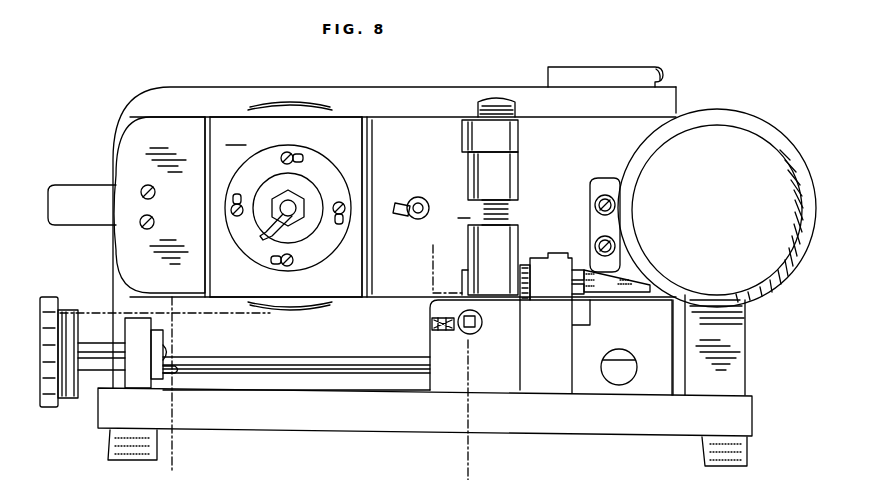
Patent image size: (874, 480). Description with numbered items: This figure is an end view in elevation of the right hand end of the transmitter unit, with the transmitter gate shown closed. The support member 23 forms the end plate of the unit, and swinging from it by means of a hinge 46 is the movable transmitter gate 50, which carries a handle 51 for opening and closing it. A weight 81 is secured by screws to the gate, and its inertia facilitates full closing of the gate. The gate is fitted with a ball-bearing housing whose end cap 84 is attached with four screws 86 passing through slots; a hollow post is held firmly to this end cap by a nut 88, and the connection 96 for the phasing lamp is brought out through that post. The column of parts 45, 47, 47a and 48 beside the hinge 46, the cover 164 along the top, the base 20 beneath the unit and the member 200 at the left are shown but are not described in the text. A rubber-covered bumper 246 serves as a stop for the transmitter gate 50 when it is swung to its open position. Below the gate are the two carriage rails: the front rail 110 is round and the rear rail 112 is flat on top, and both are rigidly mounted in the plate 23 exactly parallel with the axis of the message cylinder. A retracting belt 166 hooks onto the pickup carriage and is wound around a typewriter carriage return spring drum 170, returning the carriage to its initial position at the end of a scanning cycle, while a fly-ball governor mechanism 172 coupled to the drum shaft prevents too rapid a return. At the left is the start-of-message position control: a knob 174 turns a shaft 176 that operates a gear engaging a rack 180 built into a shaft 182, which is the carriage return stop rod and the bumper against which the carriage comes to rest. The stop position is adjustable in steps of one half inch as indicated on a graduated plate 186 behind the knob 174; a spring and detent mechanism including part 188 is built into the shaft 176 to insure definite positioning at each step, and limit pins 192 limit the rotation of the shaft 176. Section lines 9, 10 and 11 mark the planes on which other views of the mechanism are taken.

The section line 9- 9 is at (35, 322).
The section line 10- 10 is at (446, 251).
The section line 11- 11 is at (158, 303).
The base 20 is at (615, 432).
The support member 23 is at (428, 87).
The adjusting screw body 45 is at (520, 170).
The hinge 46 is at (520, 138).
The screw 47 is at (482, 207).
The knurled knob 47a is at (518, 107).
The spring 48 is at (512, 210).
The transmitter gate 50 is at (291, 206).
The handle 51 is at (70, 190).
The weight 81 is at (133, 133).
The end cap 84 is at (315, 165).
The screws 86 is at (344, 216).
The nut 88 is at (280, 192).
The lamp connection 96 is at (270, 224).
The front carriage rail 110 is at (420, 340).
The rear carriage rail 112 is at (630, 360).
The top cover plate 164 is at (617, 66).
The retracting belt 166 is at (610, 290).
The carriage return spring drum 170 is at (728, 86).
The governor mechanism 172 is at (745, 140).
The knob 174 is at (62, 405).
The shaft 176 is at (328, 358).
The rack 180 is at (472, 334).
The shaft 182 is at (480, 322).
The graduated plate 186 is at (142, 380).
The spring and detent mechanism part 188 is at (158, 343).
The limit pins 192 is at (174, 376).
The shaft 200 is at (75, 314).
The rubber-covered bumper 246 is at (527, 266).